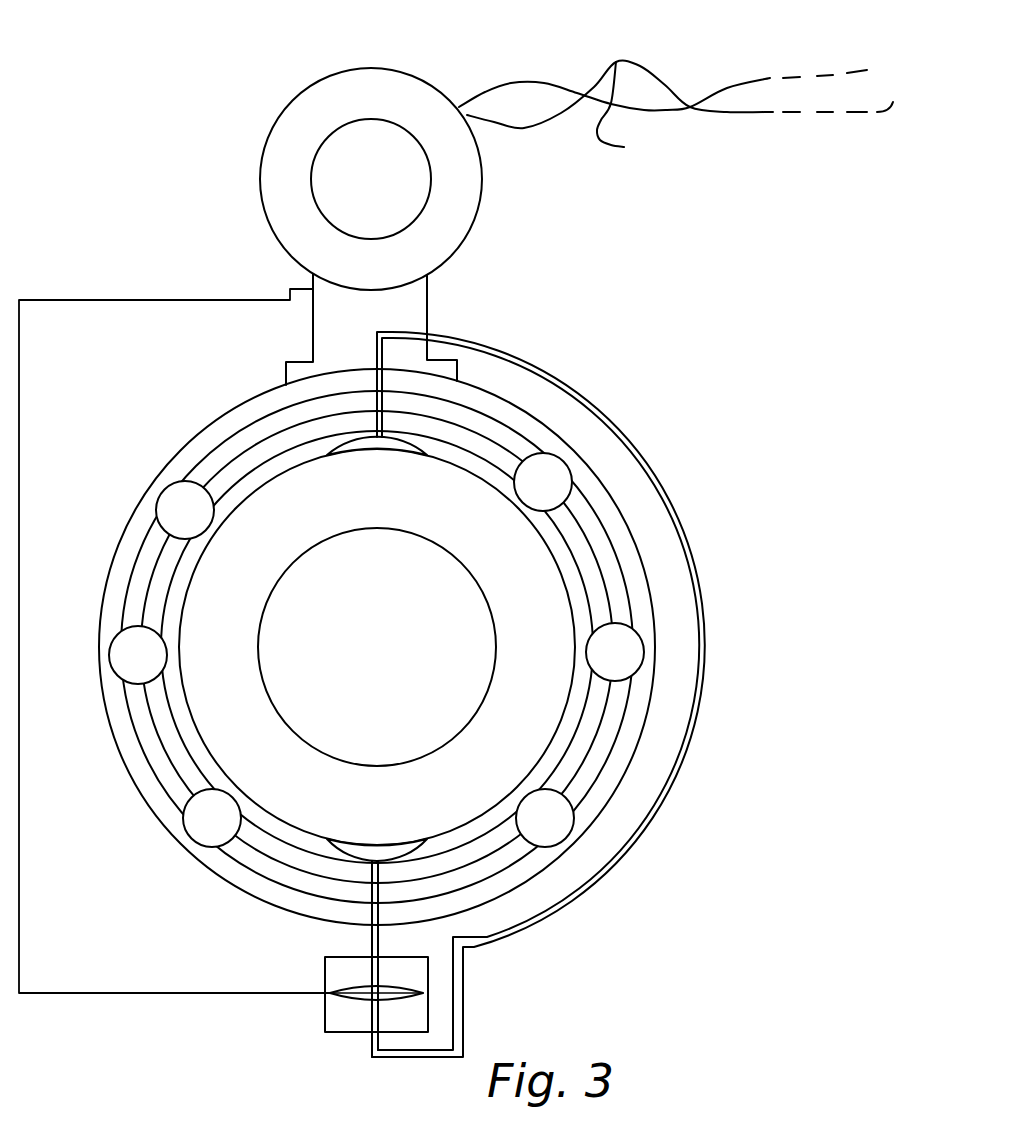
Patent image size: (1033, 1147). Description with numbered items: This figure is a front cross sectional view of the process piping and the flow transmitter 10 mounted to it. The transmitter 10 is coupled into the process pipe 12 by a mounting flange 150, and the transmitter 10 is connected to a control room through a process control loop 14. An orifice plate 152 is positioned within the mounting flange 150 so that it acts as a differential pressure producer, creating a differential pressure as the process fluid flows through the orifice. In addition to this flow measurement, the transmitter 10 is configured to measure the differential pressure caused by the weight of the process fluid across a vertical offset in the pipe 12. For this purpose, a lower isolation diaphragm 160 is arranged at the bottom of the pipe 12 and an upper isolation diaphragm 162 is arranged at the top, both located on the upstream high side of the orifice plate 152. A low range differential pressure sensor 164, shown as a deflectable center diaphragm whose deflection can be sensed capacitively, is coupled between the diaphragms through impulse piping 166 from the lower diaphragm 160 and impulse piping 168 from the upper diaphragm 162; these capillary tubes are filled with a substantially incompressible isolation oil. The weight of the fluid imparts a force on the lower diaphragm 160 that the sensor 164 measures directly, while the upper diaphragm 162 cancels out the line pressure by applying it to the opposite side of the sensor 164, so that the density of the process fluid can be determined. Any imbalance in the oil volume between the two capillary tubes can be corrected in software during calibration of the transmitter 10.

The flow transmitter 10 is at (176, 86).
The process pipe 12 is at (385, 664).
The process control loop 14 is at (676, 112).
The mounting flange 150 is at (140, 778).
The orifice plate 152 is at (207, 586).
The isolation diaphragm 160 is at (377, 822).
The isolation diaphragm 162 is at (360, 453).
The differential pressure sensor 164 is at (306, 1027).
The impulse piping 166 is at (372, 935).
The impulse piping 168 is at (600, 872).